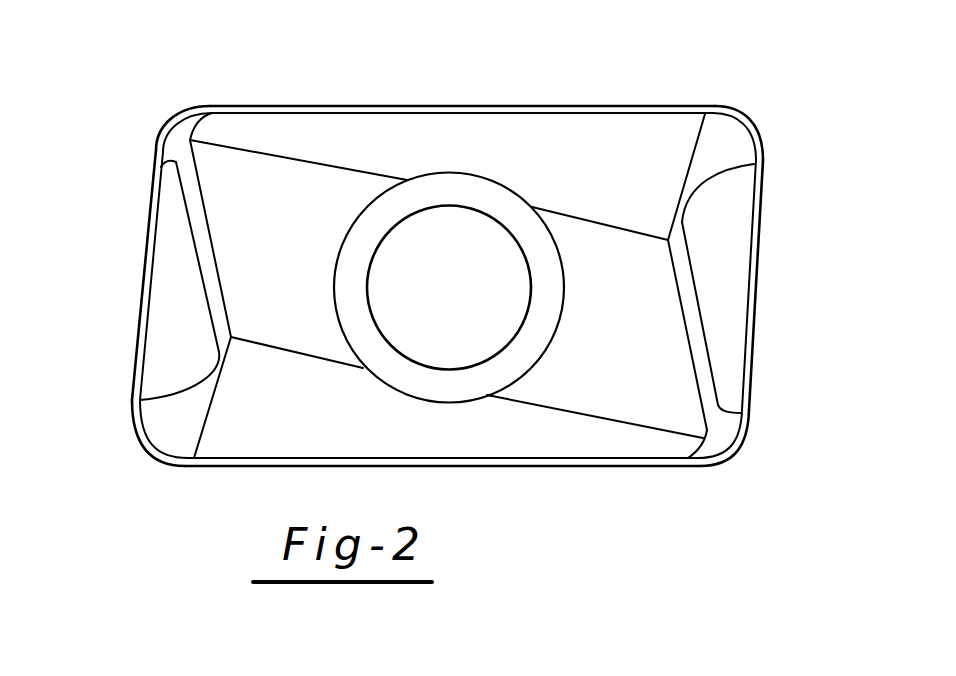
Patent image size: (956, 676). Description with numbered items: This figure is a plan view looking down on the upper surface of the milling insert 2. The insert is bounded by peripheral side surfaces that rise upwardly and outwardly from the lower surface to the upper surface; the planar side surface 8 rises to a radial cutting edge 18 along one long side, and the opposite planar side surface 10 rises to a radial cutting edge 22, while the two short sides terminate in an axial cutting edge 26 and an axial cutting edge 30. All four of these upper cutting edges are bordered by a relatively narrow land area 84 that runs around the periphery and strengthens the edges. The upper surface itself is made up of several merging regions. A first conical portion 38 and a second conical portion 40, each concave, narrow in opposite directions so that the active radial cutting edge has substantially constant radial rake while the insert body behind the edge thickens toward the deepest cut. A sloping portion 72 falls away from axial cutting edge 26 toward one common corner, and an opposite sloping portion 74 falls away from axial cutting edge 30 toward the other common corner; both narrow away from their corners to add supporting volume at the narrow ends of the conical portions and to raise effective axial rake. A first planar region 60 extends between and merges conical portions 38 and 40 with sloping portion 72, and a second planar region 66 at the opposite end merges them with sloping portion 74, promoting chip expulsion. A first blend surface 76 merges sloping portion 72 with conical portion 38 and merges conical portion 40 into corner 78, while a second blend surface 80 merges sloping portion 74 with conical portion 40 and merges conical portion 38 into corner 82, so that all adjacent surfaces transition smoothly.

The milling insert 2 is at (574, 86).
The peripheral side surface 8 is at (258, 476).
The peripheral side surface 10 is at (439, 270).
The radial cutting edge 18 is at (586, 466).
The radial cutting edge 22 is at (388, 106).
The axial cutting edge 26 is at (140, 243).
The axial cutting edge 30 is at (758, 297).
The first conical portion 38 is at (308, 433).
The second conical portion 40 is at (597, 173).
The first planar region 60 is at (280, 266).
The second planar region 66 is at (622, 378).
The sloping portion 72 is at (157, 322).
The sloping portion 74 is at (728, 338).
The first blend surface 76 is at (157, 432).
The corner 78 is at (160, 130).
The second blend surface 80 is at (733, 163).
The corner 82 is at (740, 452).
The land area 84 is at (663, 106).